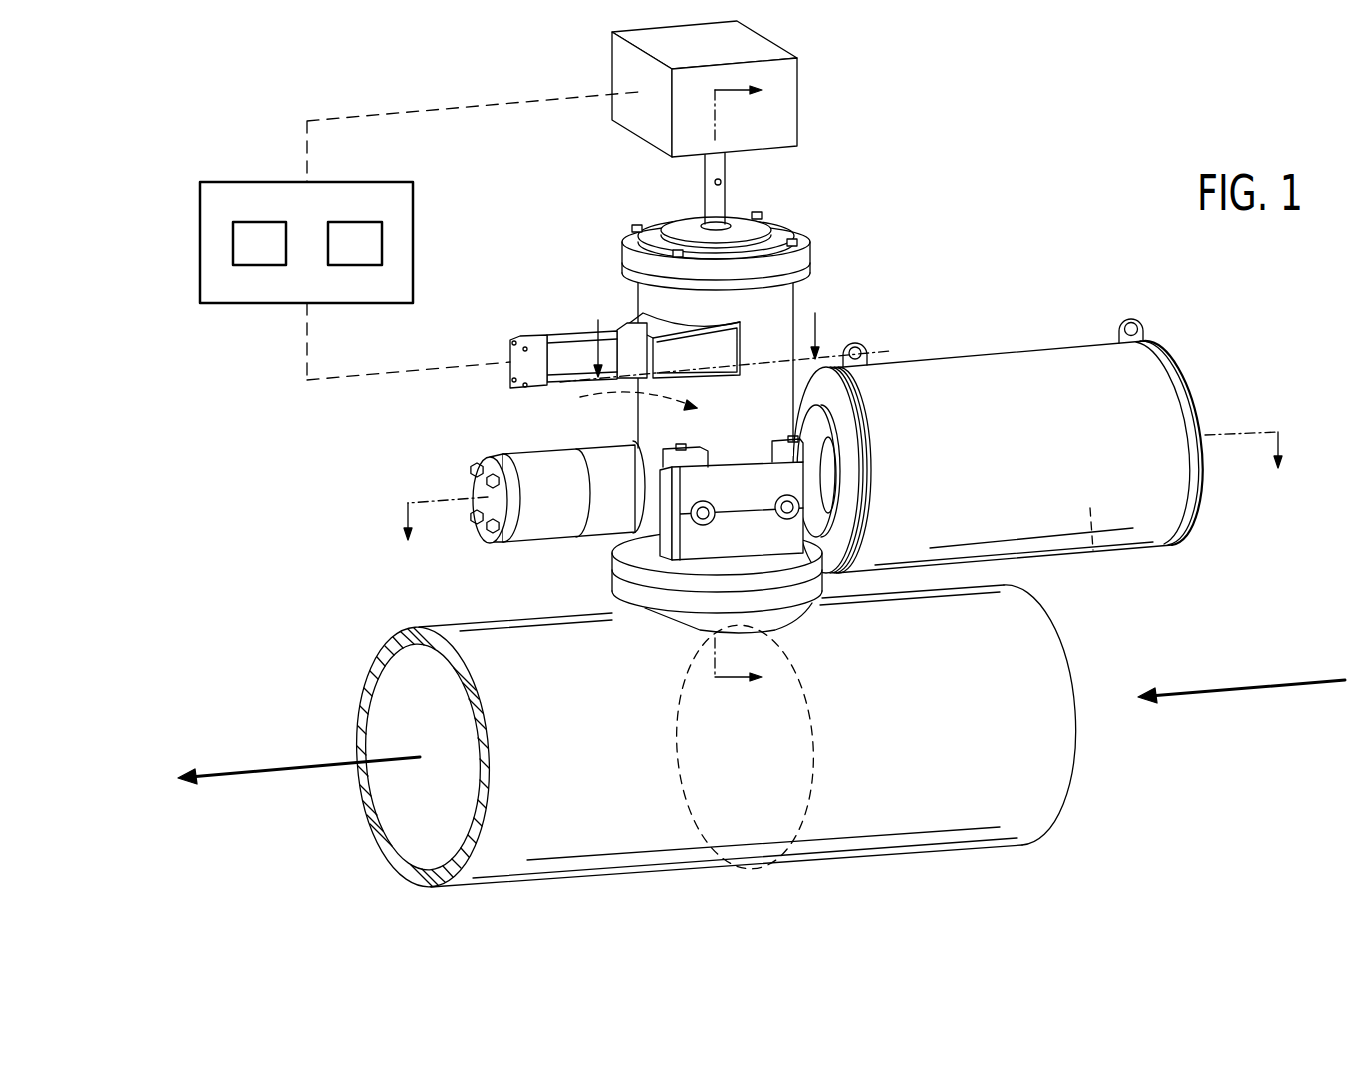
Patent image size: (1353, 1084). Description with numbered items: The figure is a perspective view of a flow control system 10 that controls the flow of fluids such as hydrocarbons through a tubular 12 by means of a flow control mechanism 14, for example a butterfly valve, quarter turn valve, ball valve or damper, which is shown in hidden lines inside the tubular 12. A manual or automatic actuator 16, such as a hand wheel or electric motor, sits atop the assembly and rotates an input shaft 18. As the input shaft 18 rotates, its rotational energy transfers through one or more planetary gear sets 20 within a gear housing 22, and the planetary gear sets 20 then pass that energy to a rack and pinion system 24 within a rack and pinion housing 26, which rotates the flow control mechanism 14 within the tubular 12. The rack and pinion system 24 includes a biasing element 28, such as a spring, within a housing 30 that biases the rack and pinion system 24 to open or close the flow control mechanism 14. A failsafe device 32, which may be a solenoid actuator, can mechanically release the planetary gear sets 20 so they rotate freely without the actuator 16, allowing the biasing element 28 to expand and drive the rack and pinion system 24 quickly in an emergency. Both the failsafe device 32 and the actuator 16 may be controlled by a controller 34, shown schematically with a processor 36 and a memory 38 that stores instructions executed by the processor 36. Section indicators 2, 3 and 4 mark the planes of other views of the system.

The section line 2- 2 is at (844, 503).
The section line 3- 3 is at (746, 382).
The section line 4- 4 is at (725, 333).
The flow control system 10 is at (972, 180).
The tubular 12 is at (373, 667).
The flow control mechanism 14 is at (813, 742).
The actuator 16 is at (745, 43).
The input shaft 18 is at (718, 167).
The planetary gear sets 20 is at (622, 401).
The gear housing 22 is at (772, 315).
The rack and pinion system 24 is at (787, 607).
The rack and pinion housing 26 is at (607, 477).
The biasing element 28 is at (1093, 550).
The housing 30 is at (992, 352).
The failsafe device 32 is at (560, 334).
The controller 34 is at (252, 182).
The processor 36 is at (233, 242).
The memory 38 is at (382, 243).